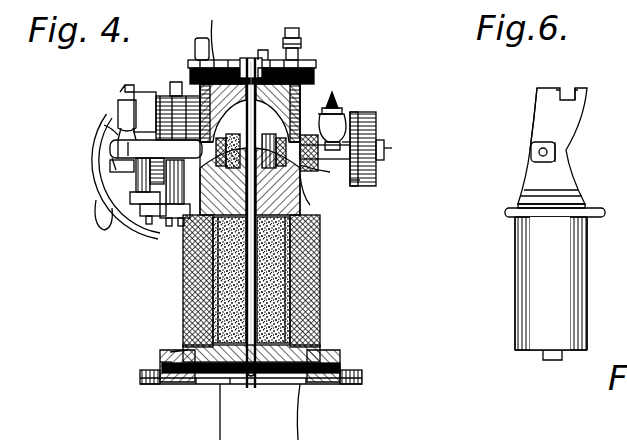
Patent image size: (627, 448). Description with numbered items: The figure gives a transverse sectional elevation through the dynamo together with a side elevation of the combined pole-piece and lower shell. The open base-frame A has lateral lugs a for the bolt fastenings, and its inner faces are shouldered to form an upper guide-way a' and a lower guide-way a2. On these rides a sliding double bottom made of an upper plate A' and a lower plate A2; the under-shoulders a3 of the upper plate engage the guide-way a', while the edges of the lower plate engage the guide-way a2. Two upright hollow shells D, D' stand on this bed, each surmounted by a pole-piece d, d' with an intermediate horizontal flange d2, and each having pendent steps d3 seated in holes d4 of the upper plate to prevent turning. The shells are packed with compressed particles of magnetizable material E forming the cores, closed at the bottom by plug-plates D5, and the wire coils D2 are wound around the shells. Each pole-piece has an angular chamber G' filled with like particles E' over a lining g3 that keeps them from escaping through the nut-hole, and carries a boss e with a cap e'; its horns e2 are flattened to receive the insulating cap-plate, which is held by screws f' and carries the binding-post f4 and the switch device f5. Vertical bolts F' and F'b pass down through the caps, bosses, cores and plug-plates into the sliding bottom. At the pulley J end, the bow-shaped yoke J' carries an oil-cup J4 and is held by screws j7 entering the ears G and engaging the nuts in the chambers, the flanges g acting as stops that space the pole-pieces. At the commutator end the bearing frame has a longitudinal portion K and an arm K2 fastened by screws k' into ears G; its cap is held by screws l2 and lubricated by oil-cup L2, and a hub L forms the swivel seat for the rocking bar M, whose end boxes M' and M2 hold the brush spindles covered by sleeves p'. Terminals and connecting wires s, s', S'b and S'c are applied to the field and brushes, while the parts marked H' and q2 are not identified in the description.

In FIG. 4, the minute particles of magnetic material E' is at (252, 34).
In FIG. 4, the vertical bolt F' is at (272, 74).
In FIG. 4, the boss e is at (251, 52).
In FIG. 6, the boss e is at (552, 133).
In FIG. 4, the cap e' is at (305, 62).
In FIG. 4, the screw f' is at (264, 36).
In FIG. 4, the shunt or switch device f5 is at (195, 50).
In FIG. 4, the lining or backing g3 is at (203, 30).
In FIG. 4, the binding-post f4 is at (300, 36).
In FIG. 4, the terminal or connecting wire s' is at (306, 47).
In FIG. 4, the pendent projection or step d3 is at (256, 380).
In FIG. 6, the pendent projection or step d3 is at (552, 360).
In FIG. 4, the magnetizable material E is at (279, 195).
In FIG. 4, the cylinder or sleeve p' is at (218, 207).
In FIG. 4, the field-magnet coil D2 is at (183, 280).
In FIG. 4, the upright hollow shell D' is at (287, 280).
In FIG. 4, the intermediate horizontal flange d2 is at (310, 215).
In FIG. 4, the upper plate A' is at (265, 348).
In FIG. 4, the base-frame A is at (251, 383).
In FIG. 4, the lug a is at (248, 376).
In FIG. 4, the upper guide-way a' is at (164, 339).
In FIG. 4, the lower guide-way a2 is at (160, 360).
In FIG. 4, the under-shoulder a3 is at (196, 384).
In FIG. 4, the lower plate A2 is at (306, 384).
In FIG. 4, the vertical bolt F'b is at (239, 397).
In FIG. 4, the plug-plate or cover D5 is at (232, 416).
In FIG. 4, the slot or hole d4 is at (306, 416).
In FIG. 4, the ear or boss G is at (325, 164).
In FIG. 4, the pole-chamber G' is at (348, 194).
In FIG. 6, the pole-chamber G' is at (570, 155).
In FIG. 4, the pole-piece d' is at (334, 191).
In FIG. 6, the pole-piece d' is at (563, 206).
In FIG. 4, the oil-cup J4 is at (337, 116).
In FIG. 4, the spring S'b is at (313, 100).
In FIG. 4, the pulley J is at (367, 140).
In FIG. 4, the bow-shape yoke or frame J' is at (378, 133).
In FIG. 4, the spindle H' is at (400, 149).
In FIG. 4, the screw j7 is at (364, 174).
In FIG. 4, the transverse arm K2 is at (147, 176).
In FIG. 4, the oil-cup L2 is at (118, 112).
In FIG. 4, the cylindrical box M' is at (138, 93).
In FIG. 4, the gear box q2 is at (200, 90).
In FIG. 4, the screw l2 is at (118, 138).
In FIG. 4, the terminal or connecting wire s is at (91, 161).
In FIG. 4, the longitudinal bearing portion K is at (110, 165).
In FIG. 4, the circular hub or flange L is at (136, 176).
In FIG. 4, the rocking bar or yoke M is at (71, 224).
In FIG. 4, the slide S'c is at (116, 219).
In FIG. 4, the cylindrical box M2 is at (146, 212).
In FIG. 4, the fastening-screw k' is at (149, 224).
In FIG. 6, the horn e2 is at (578, 96).
In FIG. 6, the pole-piece d is at (518, 119).
In FIG. 6, the lateral projection or flange g is at (531, 152).
In FIG. 6, the upright hollow shell D is at (566, 283).